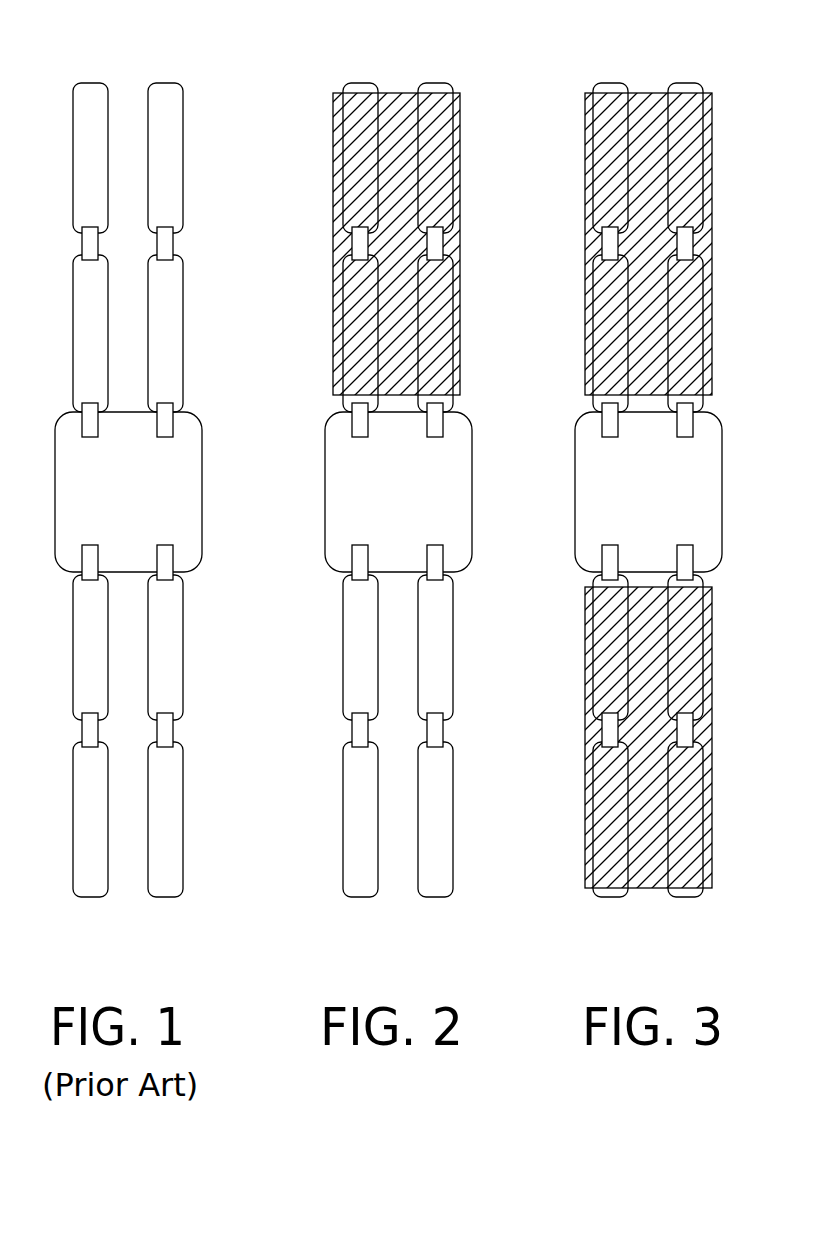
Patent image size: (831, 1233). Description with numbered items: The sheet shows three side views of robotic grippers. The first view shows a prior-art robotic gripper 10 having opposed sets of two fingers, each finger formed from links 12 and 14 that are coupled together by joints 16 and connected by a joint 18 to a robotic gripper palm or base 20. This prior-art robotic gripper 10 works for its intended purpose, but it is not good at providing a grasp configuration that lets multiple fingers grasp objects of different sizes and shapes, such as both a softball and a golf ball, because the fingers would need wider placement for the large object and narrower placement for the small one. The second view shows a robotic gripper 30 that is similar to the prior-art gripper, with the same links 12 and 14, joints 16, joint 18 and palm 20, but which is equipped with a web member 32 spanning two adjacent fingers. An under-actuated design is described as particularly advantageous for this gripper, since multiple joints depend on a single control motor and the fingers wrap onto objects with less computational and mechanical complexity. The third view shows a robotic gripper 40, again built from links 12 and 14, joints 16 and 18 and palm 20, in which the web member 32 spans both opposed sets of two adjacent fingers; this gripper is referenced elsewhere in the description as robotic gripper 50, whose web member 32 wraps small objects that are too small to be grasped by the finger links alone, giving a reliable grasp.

In FIG. 1, the prior-art robotic gripper 10 is at (233, 89).
In FIG. 3, the prior-art robotic gripper 10 is at (553, 611).
In FIG. 1, the link 12 is at (89, 82).
In FIG. 2, the link 12 is at (397, 495).
In FIG. 3, the link 12 is at (649, 496).
In FIG. 1, the link 14 is at (72, 335).
In FIG. 2, the link 14 is at (398, 487).
In FIG. 3, the link 14 is at (648, 487).
In FIG. 1, the joint 16 is at (81, 247).
In FIG. 2, the joint 16 is at (398, 487).
In FIG. 3, the joint 16 is at (648, 487).
In FIG. 1, the joint 18 is at (89, 438).
In FIG. 2, the joint 18 is at (401, 491).
In FIG. 3, the joint 18 is at (651, 491).
In FIG. 1, the robotic gripper palm 20 is at (203, 500).
In FIG. 2, the robotic gripper palm 20 is at (431, 492).
In FIG. 3, the robotic gripper palm 20 is at (643, 492).
In FIG. 2, the robotic gripper 30 is at (518, 54).
In FIG. 2, the web member 32 is at (396, 210).
In FIG. 3, the web member 32 is at (648, 494).
In FIG. 3, the robotic gripper 40 is at (772, 54).
In FIG. 2, the robotic gripper 50 is at (509, 827).